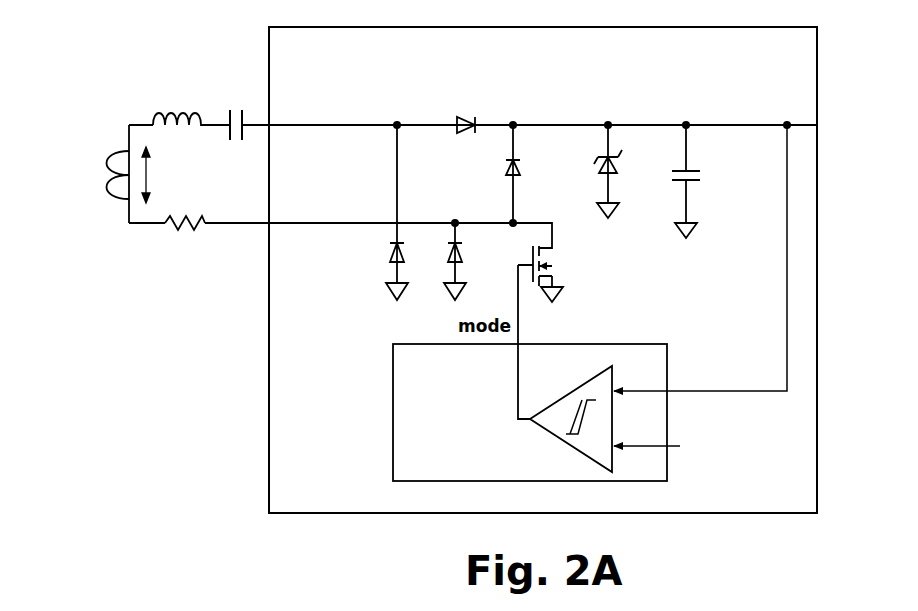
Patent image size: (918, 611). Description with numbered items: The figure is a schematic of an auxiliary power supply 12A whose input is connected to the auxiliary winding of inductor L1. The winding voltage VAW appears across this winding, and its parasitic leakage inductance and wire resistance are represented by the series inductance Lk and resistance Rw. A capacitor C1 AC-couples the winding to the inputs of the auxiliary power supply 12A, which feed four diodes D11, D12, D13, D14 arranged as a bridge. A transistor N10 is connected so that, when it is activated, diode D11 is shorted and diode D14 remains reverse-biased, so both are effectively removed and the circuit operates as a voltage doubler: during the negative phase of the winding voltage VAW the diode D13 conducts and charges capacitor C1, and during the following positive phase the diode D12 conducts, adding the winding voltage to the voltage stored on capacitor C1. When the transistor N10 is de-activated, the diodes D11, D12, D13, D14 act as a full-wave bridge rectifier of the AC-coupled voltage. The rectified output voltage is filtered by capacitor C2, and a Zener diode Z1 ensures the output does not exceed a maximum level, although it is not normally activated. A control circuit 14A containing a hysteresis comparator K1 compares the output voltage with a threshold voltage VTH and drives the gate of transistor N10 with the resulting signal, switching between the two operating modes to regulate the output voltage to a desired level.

The auxiliary power supply 12A is at (534, 270).
The control circuit 14A is at (553, 412).
The inductor L1 is at (104, 180).
The inductance Lk is at (191, 106).
The capacitor C1 is at (234, 112).
The resistance Rw is at (185, 239).
The voltage across auxiliary winding VAW is at (166, 175).
The diode D12 is at (479, 109).
The diode D13 is at (375, 212).
The diode D11 is at (473, 261).
The diode D14 is at (534, 174).
The Zener diode Z1 is at (621, 171).
The capacitor C2 is at (699, 181).
The transistor N10 is at (562, 262).
The hysteresis comparator K1 is at (571, 417).
The threshold voltage VTH is at (663, 447).